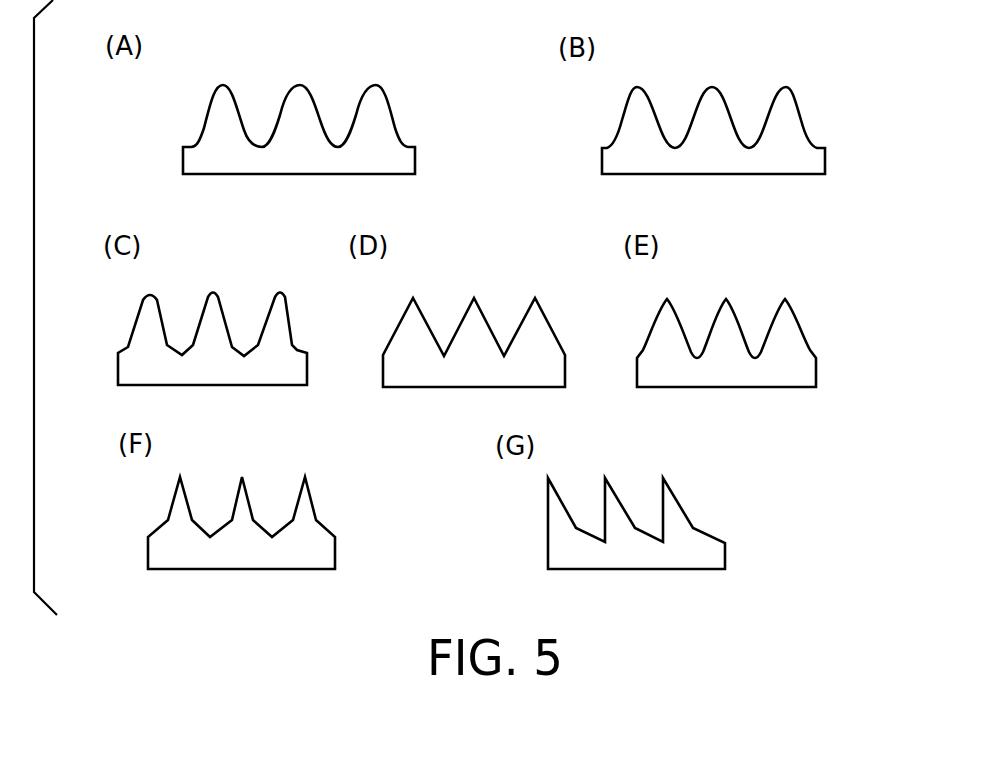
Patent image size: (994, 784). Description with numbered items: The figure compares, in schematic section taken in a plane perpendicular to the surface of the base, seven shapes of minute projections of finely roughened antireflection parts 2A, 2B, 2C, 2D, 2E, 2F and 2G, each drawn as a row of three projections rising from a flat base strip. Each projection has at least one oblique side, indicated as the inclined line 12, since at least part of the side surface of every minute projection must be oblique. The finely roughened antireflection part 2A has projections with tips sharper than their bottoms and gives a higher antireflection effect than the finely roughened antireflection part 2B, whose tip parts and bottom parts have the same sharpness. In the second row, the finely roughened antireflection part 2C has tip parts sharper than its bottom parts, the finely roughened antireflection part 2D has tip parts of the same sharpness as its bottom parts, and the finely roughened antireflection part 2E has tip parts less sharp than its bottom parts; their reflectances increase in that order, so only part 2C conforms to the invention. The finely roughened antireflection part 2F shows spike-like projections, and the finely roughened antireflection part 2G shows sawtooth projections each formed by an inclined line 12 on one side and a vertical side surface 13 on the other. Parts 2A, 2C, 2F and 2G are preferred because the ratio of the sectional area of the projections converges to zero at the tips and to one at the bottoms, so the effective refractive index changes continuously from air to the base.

The inclined line 12 is at (235, 110).
The finely roughened antireflection part 2A is at (301, 103).
The finely roughened antireflection part 2B is at (717, 107).
The finely roughened antireflection part 2C is at (215, 322).
The finely roughened antireflection part 2D is at (478, 322).
The finely roughened antireflection part 2E is at (735, 322).
The finely roughened antireflection part 2F is at (242, 510).
The finely roughened antireflection part 2G is at (617, 520).
The vertical side surface 13 is at (548, 515).